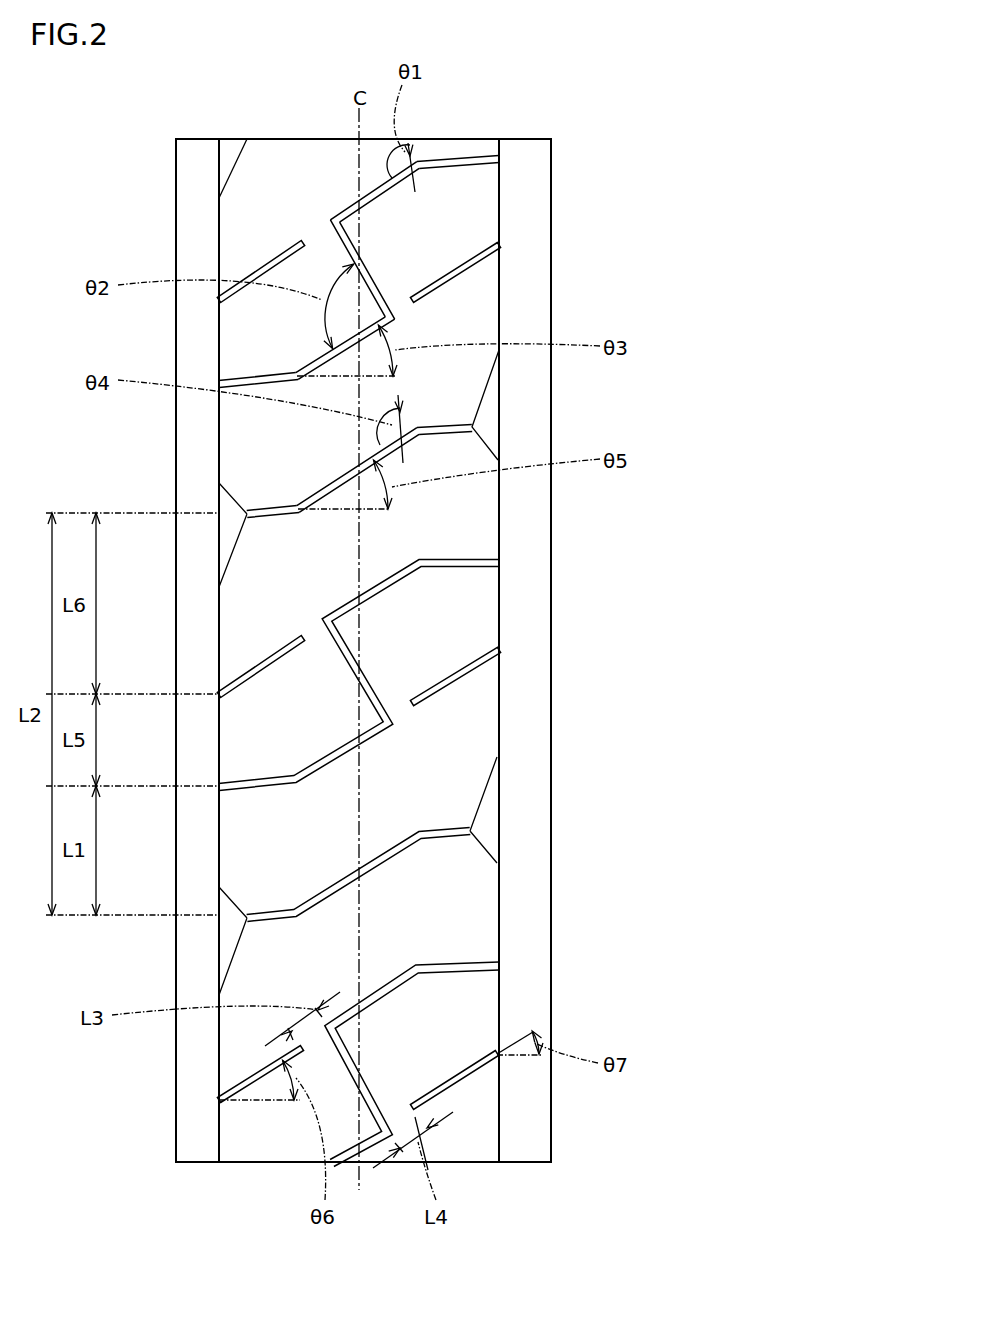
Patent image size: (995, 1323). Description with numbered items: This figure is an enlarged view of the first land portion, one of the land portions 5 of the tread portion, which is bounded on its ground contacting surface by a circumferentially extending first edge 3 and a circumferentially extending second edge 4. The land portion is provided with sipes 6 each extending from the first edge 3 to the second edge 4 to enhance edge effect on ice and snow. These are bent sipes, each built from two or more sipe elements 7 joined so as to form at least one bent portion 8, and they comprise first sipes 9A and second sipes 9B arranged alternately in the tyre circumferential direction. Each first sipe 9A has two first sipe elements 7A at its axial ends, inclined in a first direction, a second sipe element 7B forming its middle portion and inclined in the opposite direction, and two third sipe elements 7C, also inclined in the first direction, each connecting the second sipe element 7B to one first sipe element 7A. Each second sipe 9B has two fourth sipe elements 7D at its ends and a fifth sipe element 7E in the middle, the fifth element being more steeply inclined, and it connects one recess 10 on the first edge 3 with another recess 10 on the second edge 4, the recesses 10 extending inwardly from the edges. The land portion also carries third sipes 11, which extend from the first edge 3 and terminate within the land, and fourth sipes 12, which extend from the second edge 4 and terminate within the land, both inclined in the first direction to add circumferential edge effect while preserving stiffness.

The first edge 3 is at (215, 162).
The second edge 4 is at (501, 162).
The land portions 5 is at (307, 160).
The sipes 6 is at (732, 661).
The sipe elements 7 is at (455, 565).
The first sipe elements 7A is at (452, 157).
The second sipe element 7B is at (380, 280).
The third sipe elements 7C is at (408, 172).
The fourth sipe elements 7D is at (440, 432).
The fifth sipe element 7E is at (360, 470).
The bent portion 8 is at (312, 927).
The first sipes 9A is at (678, 543).
The second sipes 9B is at (678, 861).
The recesses 10 is at (480, 832).
The third sipes 11 is at (244, 269).
The fourth sipes 12 is at (470, 275).